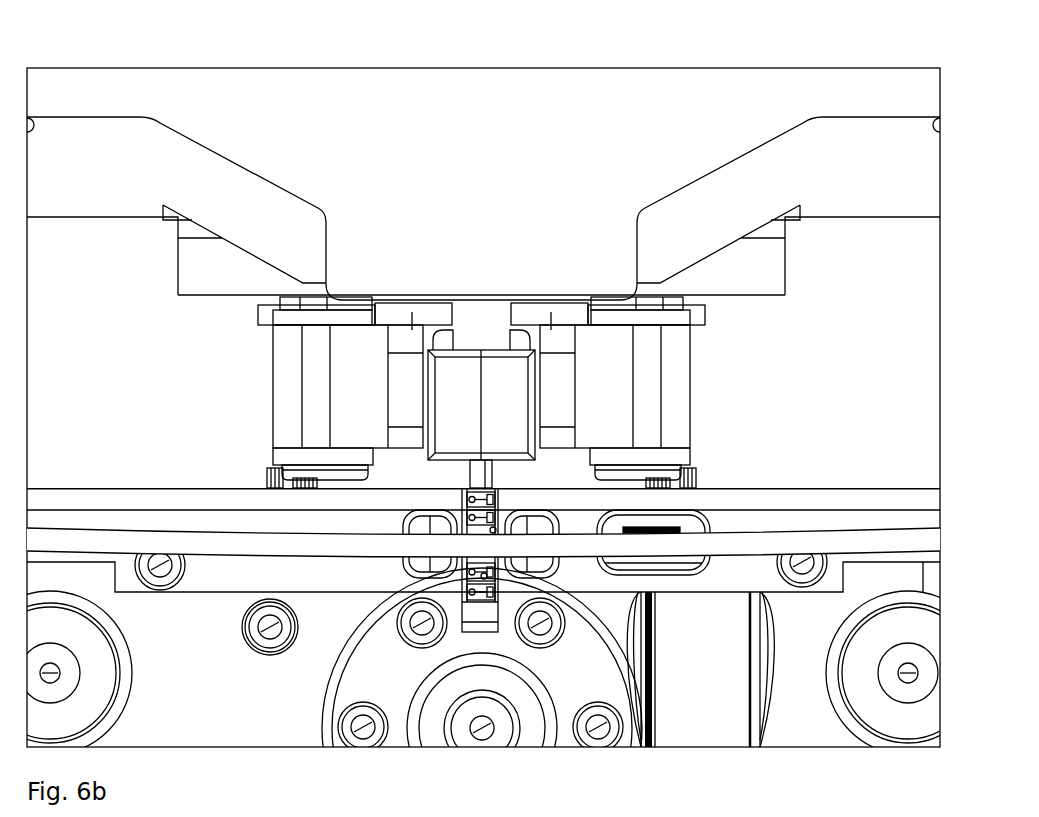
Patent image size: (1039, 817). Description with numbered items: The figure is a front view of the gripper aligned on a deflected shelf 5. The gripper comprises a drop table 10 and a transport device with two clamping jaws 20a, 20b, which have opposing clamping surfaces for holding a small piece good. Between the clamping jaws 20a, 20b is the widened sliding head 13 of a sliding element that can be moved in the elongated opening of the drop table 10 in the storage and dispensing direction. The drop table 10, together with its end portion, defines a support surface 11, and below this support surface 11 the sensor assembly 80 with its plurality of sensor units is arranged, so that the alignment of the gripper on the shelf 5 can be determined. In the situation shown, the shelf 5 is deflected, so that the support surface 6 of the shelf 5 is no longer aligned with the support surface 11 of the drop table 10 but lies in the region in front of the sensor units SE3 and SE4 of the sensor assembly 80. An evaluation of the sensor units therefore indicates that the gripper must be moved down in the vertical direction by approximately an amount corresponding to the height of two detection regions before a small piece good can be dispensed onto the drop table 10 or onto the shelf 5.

The clamping jaw 20a is at (315, 362).
The clamping jaw 20b is at (641, 367).
The sliding head 13 is at (462, 383).
The sensor unit SE3 is at (508, 532).
The sensor unit SE4 is at (483, 577).
The support surface 11 is at (733, 488).
The drop table 10 is at (770, 500).
The support surface 6 is at (800, 532).
The shelf 5 is at (855, 540).
The sensor assembly 80 is at (453, 600).